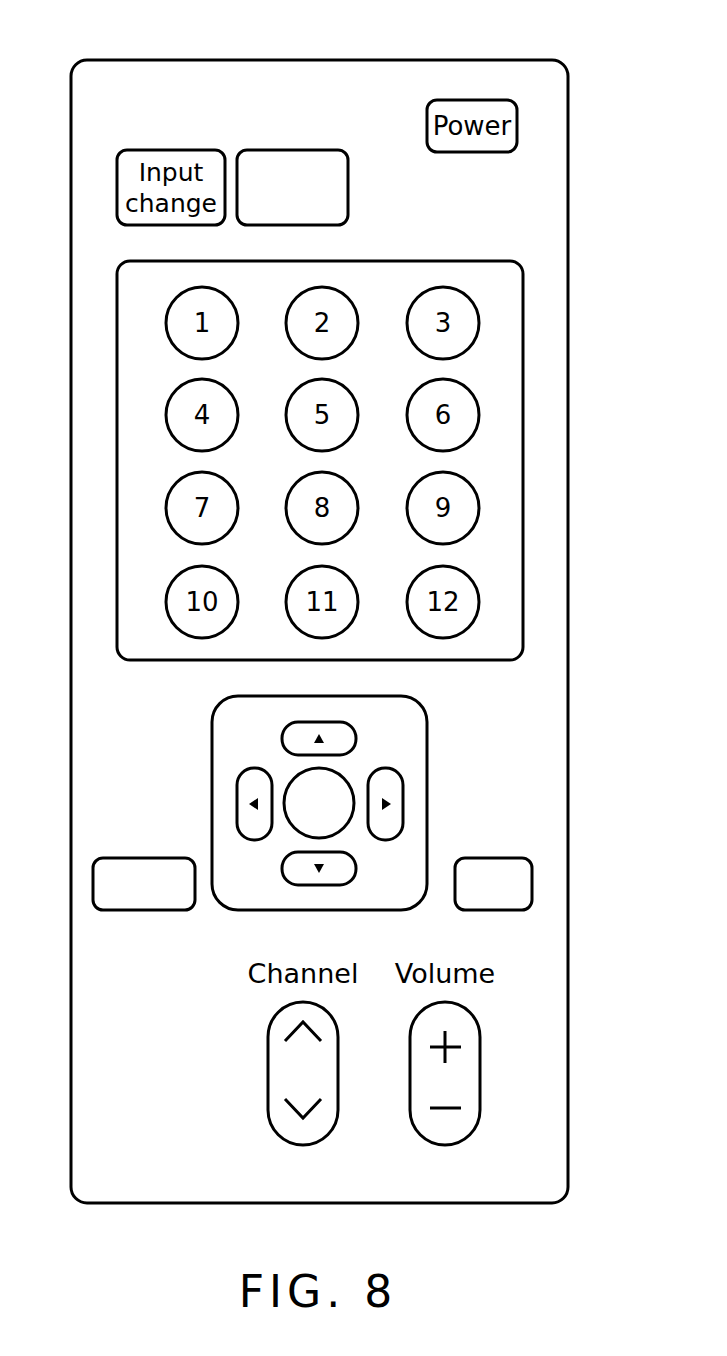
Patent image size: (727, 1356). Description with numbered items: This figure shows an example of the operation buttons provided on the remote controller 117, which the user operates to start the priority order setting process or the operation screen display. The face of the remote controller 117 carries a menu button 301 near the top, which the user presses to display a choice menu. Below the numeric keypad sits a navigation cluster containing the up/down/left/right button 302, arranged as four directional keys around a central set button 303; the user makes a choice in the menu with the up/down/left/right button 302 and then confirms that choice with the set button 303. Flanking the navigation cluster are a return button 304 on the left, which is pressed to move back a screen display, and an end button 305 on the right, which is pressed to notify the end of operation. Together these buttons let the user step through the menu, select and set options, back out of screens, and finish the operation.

The remote controller 117 is at (470, 58).
The menu button 301 is at (290, 150).
The up/down/left/right button 302 is at (356, 735).
The set button 303 is at (293, 780).
The return button 304 is at (143, 858).
The end button 305 is at (503, 858).